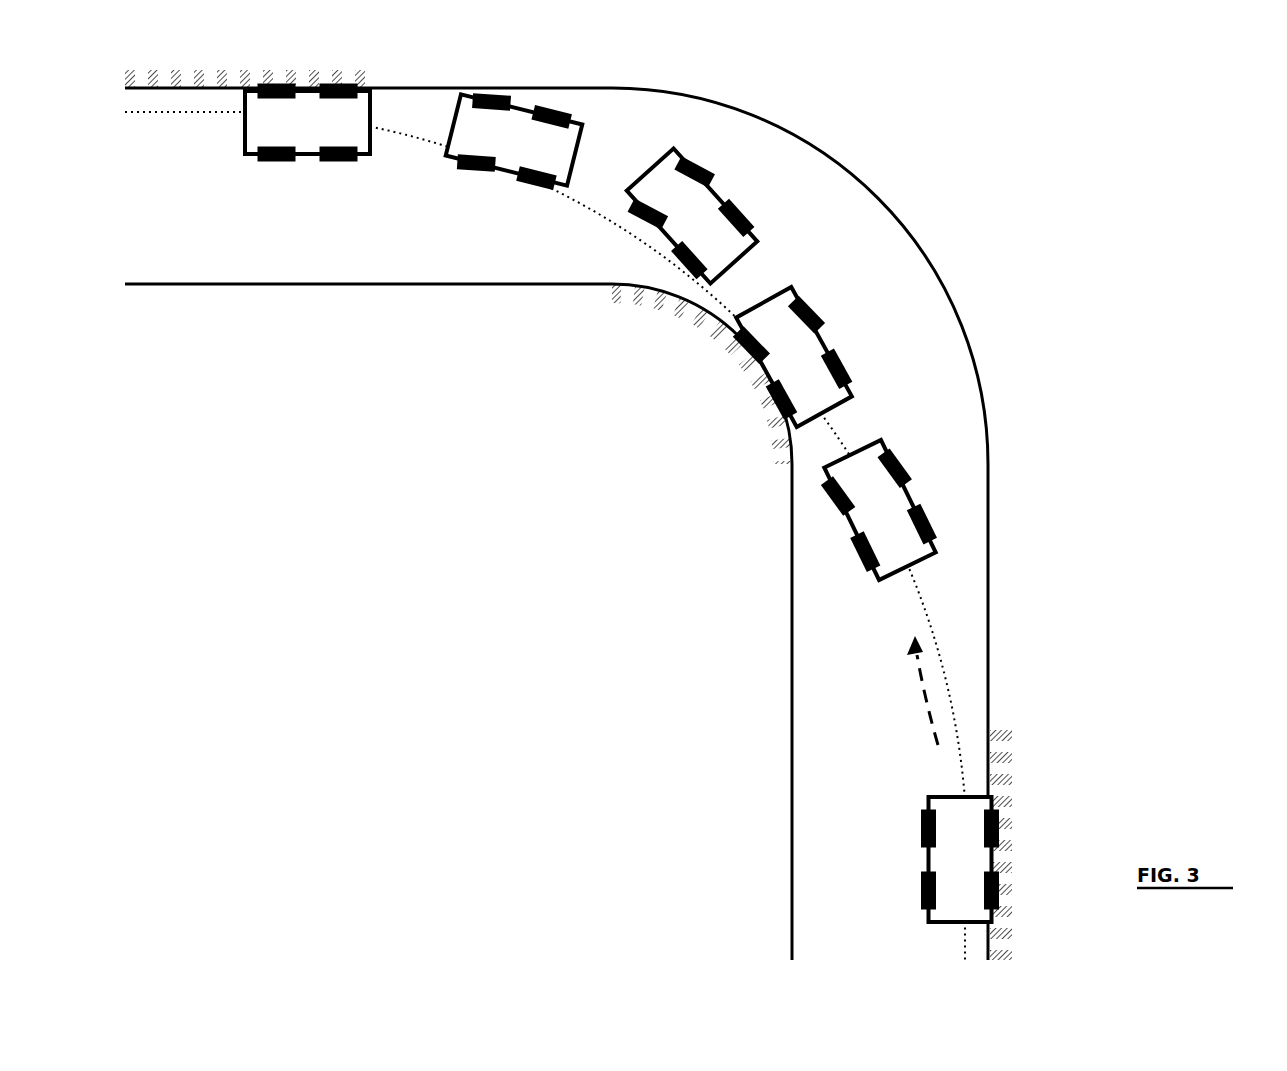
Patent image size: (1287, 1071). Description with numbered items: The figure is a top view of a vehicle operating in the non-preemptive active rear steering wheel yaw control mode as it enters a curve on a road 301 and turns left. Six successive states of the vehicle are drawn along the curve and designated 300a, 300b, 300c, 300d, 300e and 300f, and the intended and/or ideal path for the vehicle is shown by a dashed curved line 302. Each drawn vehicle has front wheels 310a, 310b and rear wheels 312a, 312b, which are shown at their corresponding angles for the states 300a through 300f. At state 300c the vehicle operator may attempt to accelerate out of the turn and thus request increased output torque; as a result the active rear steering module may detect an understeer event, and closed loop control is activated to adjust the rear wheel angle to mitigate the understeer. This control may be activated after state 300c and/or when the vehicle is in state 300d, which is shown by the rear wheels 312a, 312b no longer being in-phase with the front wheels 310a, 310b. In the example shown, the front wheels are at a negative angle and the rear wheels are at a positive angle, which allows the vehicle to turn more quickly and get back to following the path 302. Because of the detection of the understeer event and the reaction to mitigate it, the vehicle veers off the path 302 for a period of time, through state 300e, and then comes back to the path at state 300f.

The vehicle state 300a is at (980, 797).
The vehicle state 300b is at (935, 553).
The vehicle state 300c is at (850, 397).
The vehicle state 300d is at (760, 240).
The vehicle state 300e is at (585, 134).
The vehicle state 300f is at (368, 108).
The road 301 is at (888, 203).
The dashed curved line 302 is at (182, 118).
The front wheel 310a is at (275, 162).
The front wheel 310b is at (278, 88).
The rear wheel 312a is at (332, 160).
The rear wheel 312b is at (348, 88).